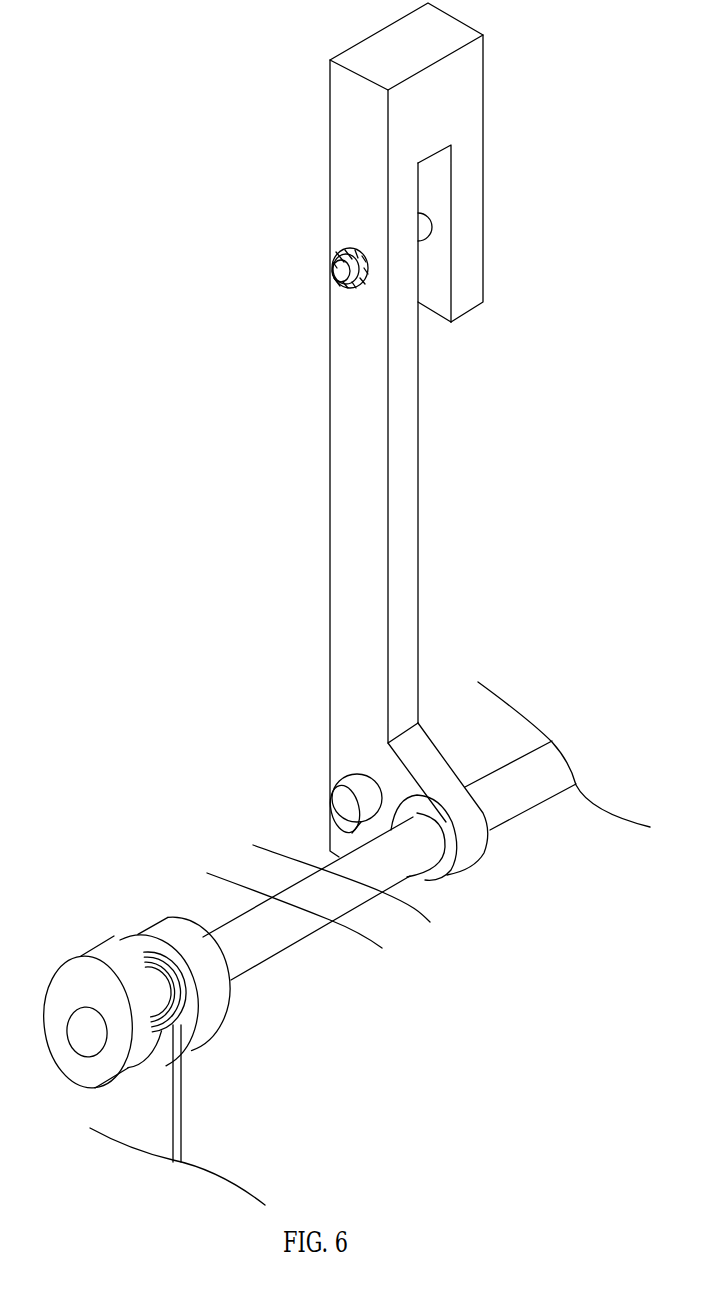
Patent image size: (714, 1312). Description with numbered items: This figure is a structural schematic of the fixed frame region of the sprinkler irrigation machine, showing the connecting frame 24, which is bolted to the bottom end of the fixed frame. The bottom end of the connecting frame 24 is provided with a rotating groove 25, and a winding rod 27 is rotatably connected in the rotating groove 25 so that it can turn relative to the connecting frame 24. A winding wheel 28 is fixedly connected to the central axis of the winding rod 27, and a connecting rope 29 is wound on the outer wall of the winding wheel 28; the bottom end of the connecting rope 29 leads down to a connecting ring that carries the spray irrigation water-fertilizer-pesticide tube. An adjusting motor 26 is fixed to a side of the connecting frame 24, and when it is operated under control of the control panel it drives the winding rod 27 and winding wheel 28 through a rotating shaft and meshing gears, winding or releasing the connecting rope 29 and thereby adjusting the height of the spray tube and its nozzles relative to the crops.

The connecting frame 24 is at (388, 547).
The rotating groove 25 is at (446, 822).
The adjusting motor 26 is at (355, 794).
The winding rod 27 is at (282, 948).
The winding wheel 28 is at (193, 985).
The connecting rope 29 is at (177, 993).